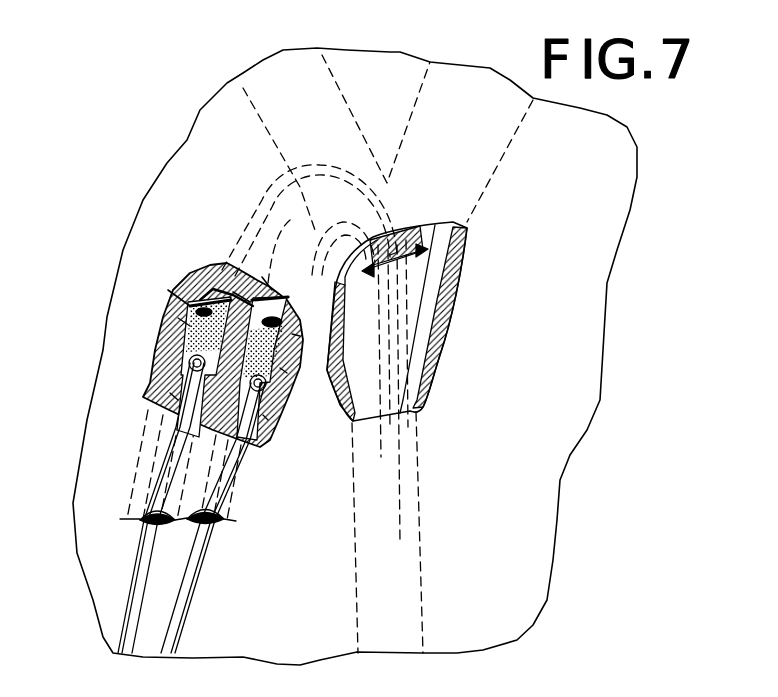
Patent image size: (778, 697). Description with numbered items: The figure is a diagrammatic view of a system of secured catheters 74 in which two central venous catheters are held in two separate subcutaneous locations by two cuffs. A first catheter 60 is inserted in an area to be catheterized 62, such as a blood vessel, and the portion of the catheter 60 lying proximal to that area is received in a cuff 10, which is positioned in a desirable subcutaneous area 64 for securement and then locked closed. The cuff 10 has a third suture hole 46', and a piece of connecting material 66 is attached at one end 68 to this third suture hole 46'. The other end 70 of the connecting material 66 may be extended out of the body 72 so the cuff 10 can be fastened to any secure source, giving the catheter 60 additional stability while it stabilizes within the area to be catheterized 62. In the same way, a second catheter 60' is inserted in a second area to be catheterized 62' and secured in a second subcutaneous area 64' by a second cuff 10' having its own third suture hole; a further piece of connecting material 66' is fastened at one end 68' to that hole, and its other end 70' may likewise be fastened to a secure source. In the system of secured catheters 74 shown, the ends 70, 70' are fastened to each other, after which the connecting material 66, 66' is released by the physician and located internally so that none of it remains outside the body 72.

The cuff 10 is at (151, 338).
The second cuff 10' is at (336, 346).
The third suture hole 46' is at (226, 303).
The catheter 60 is at (146, 508).
The second catheter 60' is at (213, 518).
The area to be catheterized 62 is at (398, 413).
The second area to be catheterized 62' is at (371, 284).
The subcutaneous area 64 is at (137, 408).
The second subcutaneous area 64' is at (294, 436).
The connecting material 66 is at (177, 257).
The further piece of connecting material 66' is at (248, 233).
The one end of connecting material 68 is at (171, 318).
The one end of further connecting material 68' is at (303, 308).
The other end of connecting material 70 is at (210, 255).
The other end of further connecting material 70' is at (306, 390).
The body 72 is at (272, 595).
The system of secured catheters 74 is at (146, 281).